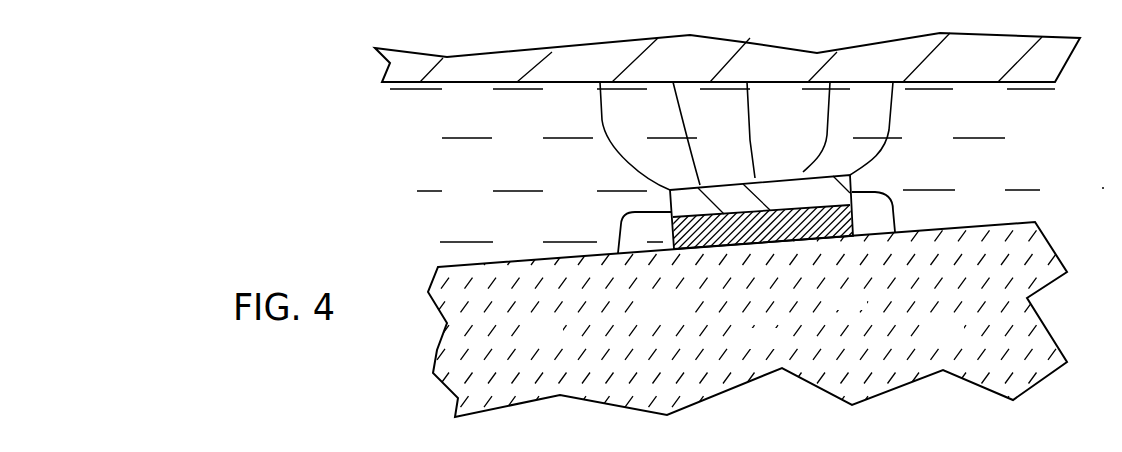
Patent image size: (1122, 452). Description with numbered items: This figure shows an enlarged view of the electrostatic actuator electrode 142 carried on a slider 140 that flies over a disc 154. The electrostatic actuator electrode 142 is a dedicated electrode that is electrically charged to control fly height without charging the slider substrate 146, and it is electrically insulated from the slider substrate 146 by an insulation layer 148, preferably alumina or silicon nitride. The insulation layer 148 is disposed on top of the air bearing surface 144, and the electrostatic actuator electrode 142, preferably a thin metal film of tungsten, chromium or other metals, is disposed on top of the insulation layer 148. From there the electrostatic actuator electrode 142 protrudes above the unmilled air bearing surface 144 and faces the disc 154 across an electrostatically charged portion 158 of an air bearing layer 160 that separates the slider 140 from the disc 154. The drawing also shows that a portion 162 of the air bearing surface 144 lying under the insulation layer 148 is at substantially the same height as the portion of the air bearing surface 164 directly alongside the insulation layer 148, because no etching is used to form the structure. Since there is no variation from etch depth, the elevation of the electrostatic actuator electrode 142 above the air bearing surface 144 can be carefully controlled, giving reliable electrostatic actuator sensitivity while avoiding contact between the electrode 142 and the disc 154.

The slider 140 is at (390, 343).
The electrostatic actuator electrode 142 is at (787, 178).
The air bearing surface 144 is at (532, 249).
The slider substrate 146 is at (560, 339).
The insulation layer 148 is at (695, 235).
The disc 154 is at (1023, 70).
The electrostatically charged portion 158 is at (802, 137).
The air bearing layer 160 is at (457, 136).
The portion of the air bearing surface 162 is at (757, 268).
The portion of the air bearing surface 164 is at (882, 247).